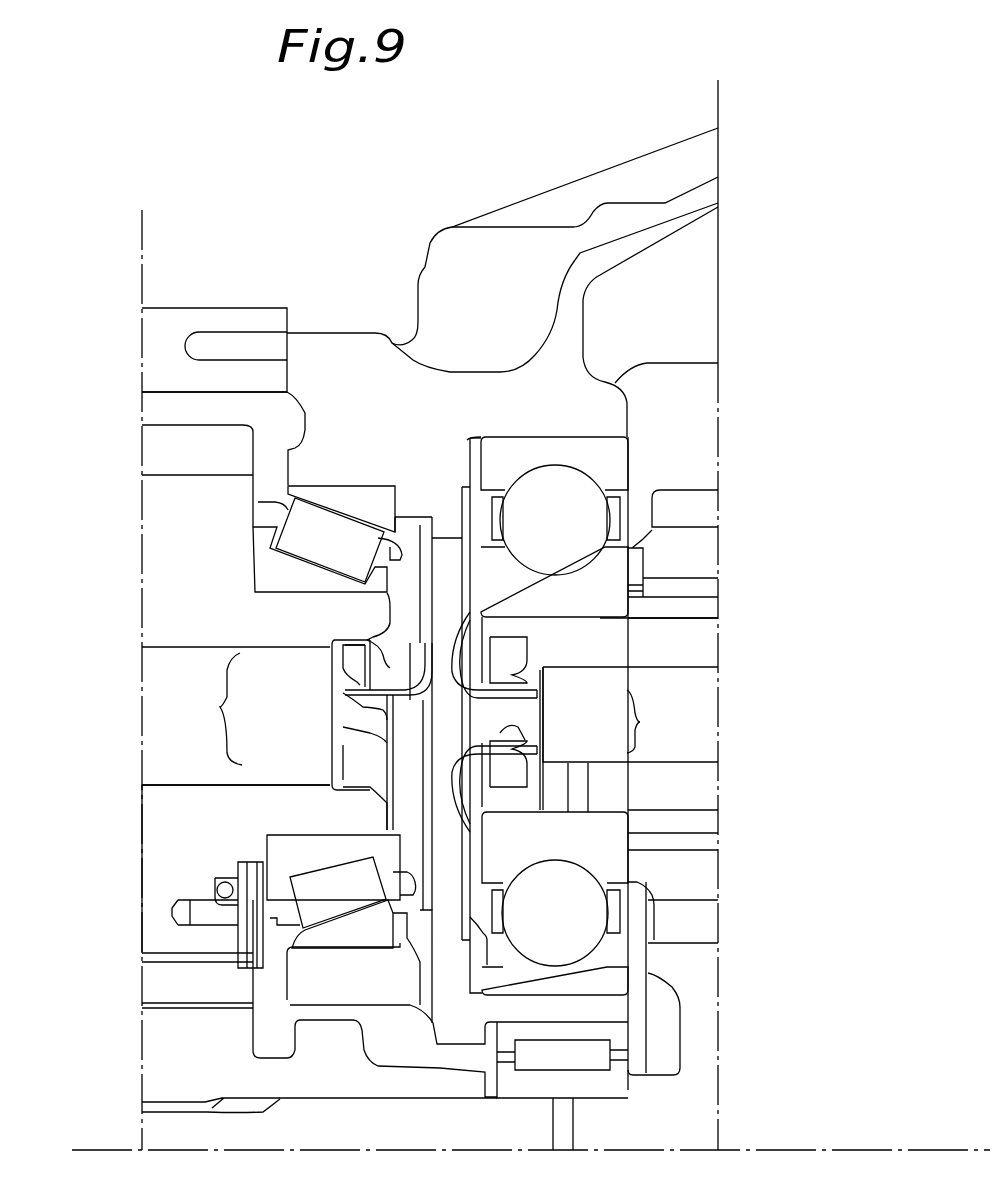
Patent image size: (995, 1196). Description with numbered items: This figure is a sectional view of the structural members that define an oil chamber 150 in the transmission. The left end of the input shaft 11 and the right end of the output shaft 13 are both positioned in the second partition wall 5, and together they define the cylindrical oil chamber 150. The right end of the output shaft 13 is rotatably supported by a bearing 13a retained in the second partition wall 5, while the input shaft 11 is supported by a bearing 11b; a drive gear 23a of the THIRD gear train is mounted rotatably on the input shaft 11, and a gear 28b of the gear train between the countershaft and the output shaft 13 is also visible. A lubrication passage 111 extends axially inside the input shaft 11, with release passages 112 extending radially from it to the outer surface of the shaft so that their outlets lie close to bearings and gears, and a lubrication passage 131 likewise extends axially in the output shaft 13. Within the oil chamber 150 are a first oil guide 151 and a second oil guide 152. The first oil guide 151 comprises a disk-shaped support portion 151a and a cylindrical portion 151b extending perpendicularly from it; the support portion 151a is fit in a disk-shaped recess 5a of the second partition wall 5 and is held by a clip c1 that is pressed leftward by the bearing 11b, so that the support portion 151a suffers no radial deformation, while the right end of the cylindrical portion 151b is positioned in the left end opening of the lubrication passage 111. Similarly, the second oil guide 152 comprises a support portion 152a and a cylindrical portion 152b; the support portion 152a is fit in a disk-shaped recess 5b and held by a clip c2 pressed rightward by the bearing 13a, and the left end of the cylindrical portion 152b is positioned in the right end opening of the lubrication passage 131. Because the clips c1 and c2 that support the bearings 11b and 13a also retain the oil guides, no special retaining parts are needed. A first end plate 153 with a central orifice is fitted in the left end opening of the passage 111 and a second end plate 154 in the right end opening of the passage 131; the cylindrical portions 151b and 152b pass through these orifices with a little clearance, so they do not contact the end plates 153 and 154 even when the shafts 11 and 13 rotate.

The second partition wall 5 is at (403, 367).
The disk-shaped recess 5a is at (482, 917).
The disk-shaped recess 5b is at (413, 943).
The input shaft 11 is at (693, 643).
The bearing 11b is at (587, 500).
The output shaft 13 is at (170, 607).
The bearing 13a is at (330, 533).
The drive gear 23a is at (683, 497).
The gear 28b is at (195, 438).
The lubrication passage 111 is at (688, 752).
The release passage 112 is at (568, 790).
The lubrication passage 131 is at (162, 770).
The oil chamber 150 is at (447, 563).
The first oil guide 151 is at (653, 721).
The support portion 151a is at (540, 703).
The cylindrical portion 151b is at (543, 740).
The second oil guide 152 is at (279, 735).
The support portion 152a is at (332, 687).
The cylindrical portion 152b is at (332, 735).
The first end plate 153 is at (532, 643).
The second end plate 154 is at (363, 638).
The clip c1 is at (500, 437).
The clip c2 is at (402, 502).